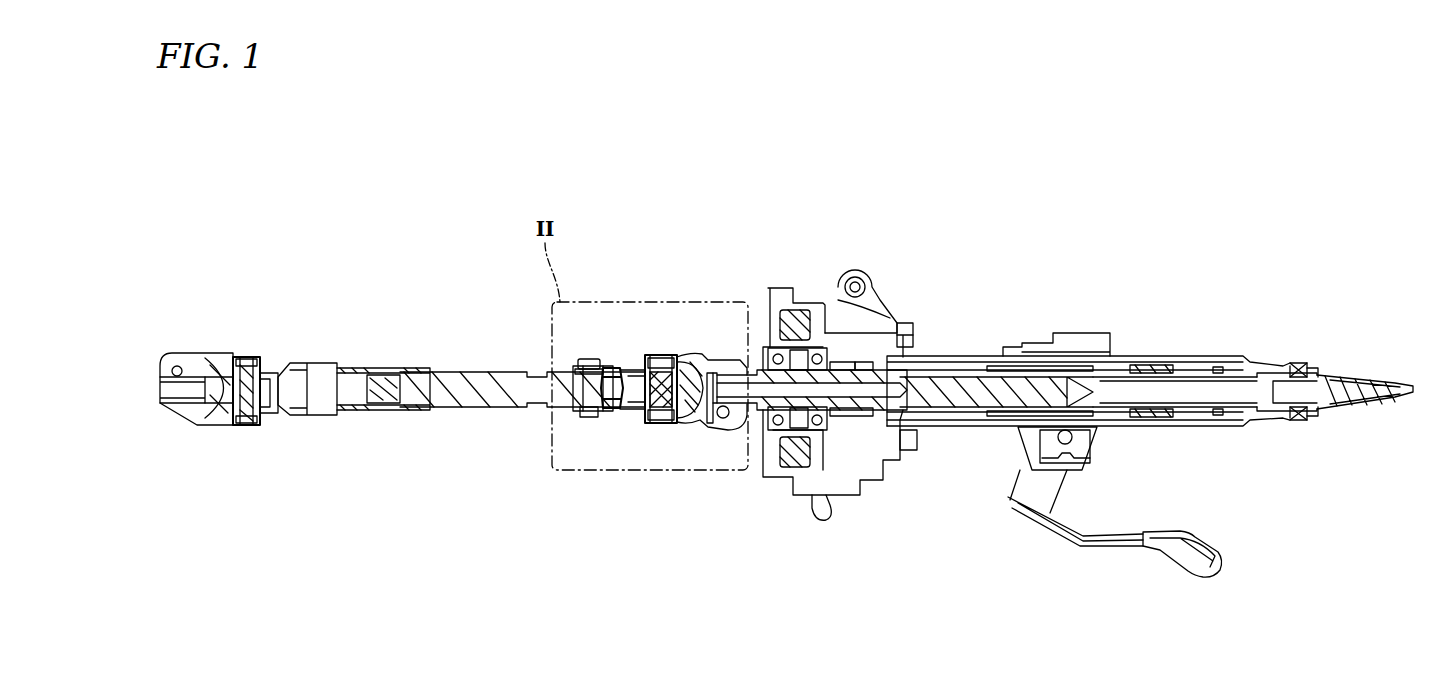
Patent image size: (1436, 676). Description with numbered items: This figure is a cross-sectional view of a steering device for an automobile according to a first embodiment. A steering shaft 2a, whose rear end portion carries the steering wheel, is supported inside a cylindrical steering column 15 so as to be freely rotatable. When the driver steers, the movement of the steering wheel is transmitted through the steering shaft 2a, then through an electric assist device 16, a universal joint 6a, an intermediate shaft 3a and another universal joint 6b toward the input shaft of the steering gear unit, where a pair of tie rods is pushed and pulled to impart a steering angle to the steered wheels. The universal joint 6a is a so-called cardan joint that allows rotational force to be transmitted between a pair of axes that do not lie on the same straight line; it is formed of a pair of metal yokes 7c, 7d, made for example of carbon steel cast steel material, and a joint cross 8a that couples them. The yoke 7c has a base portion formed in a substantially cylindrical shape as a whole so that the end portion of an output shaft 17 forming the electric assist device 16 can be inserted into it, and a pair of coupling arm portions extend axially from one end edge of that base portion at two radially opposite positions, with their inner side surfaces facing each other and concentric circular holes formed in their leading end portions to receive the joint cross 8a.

The steering shaft 2a is at (1245, 356).
The intermediate shaft 3a is at (465, 385).
The universal joint 6a is at (690, 357).
The universal joint 6b is at (241, 357).
The yoke 7c is at (707, 427).
The yoke 7d is at (632, 407).
The joint cross 8a is at (645, 420).
The steering column 15 is at (1133, 356).
The electric assist device 16 is at (796, 328).
The output shaft 17 is at (760, 410).